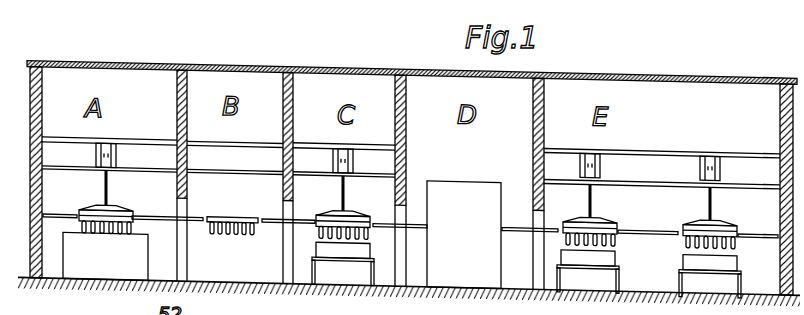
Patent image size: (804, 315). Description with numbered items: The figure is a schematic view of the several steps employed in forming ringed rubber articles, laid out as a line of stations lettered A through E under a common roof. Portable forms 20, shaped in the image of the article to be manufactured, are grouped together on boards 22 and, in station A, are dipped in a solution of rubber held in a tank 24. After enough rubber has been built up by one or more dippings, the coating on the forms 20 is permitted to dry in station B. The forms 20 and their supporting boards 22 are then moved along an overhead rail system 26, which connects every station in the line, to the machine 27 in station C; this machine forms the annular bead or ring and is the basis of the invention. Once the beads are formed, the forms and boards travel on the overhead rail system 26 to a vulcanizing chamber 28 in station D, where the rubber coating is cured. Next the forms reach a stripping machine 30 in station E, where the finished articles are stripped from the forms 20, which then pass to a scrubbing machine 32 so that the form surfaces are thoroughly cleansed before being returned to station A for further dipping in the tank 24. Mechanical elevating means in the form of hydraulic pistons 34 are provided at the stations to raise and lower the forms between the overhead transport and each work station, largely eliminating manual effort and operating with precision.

The portable forms 20 is at (133, 224).
The boards 22 is at (250, 210).
The tank 24 is at (105, 256).
The overhead rail system 26 is at (275, 221).
The bead forming machine 27 is at (348, 243).
The vulcanizing chamber 28 is at (462, 187).
The stripping machine 30 is at (606, 244).
The scrubbing machine 32 is at (728, 243).
The hydraulic piston 34 is at (103, 178).